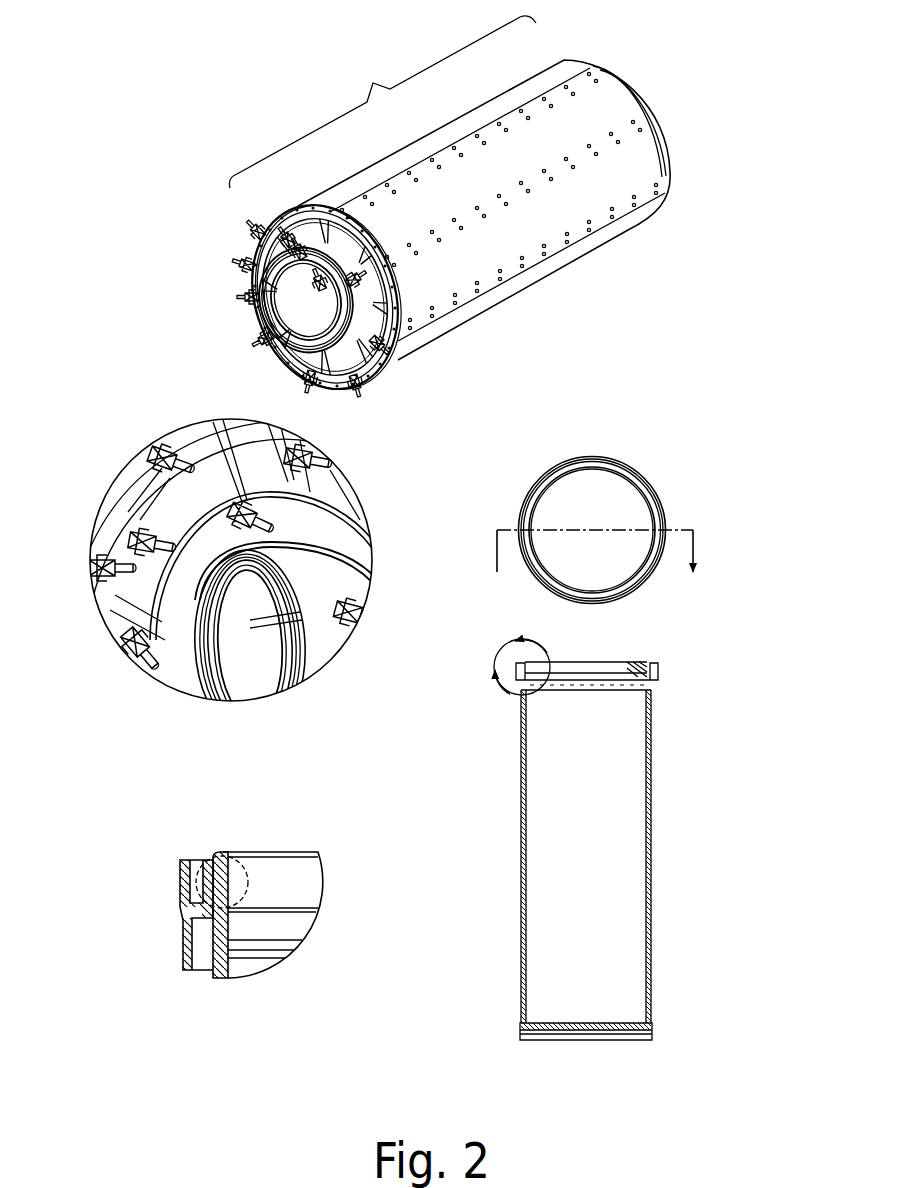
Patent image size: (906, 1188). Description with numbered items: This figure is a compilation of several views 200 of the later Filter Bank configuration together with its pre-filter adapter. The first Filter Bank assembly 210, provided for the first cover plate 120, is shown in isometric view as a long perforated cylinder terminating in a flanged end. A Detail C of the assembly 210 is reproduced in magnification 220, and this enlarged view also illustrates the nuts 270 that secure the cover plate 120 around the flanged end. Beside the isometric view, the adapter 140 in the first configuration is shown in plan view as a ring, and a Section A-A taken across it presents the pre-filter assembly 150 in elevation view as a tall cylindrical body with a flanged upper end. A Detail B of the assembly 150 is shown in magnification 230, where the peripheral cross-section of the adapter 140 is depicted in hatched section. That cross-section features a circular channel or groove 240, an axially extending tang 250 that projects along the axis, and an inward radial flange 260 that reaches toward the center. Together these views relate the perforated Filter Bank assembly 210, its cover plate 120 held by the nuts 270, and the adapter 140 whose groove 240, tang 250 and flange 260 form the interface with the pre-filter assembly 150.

The views 200 is at (138, 77).
The first cover plate 120 is at (387, 372).
The first Filter Bank assembly 210 is at (382, 102).
The magnification 220 is at (367, 520).
The nuts 270 is at (277, 470).
The pre-filter assembly 150 is at (277, 302).
The adapter 140 is at (640, 478).
The magnification 230 is at (317, 905).
The circular channel or groove 240 is at (195, 860).
The axially extending tang 250 is at (190, 965).
The inward radial flange 260 is at (250, 878).